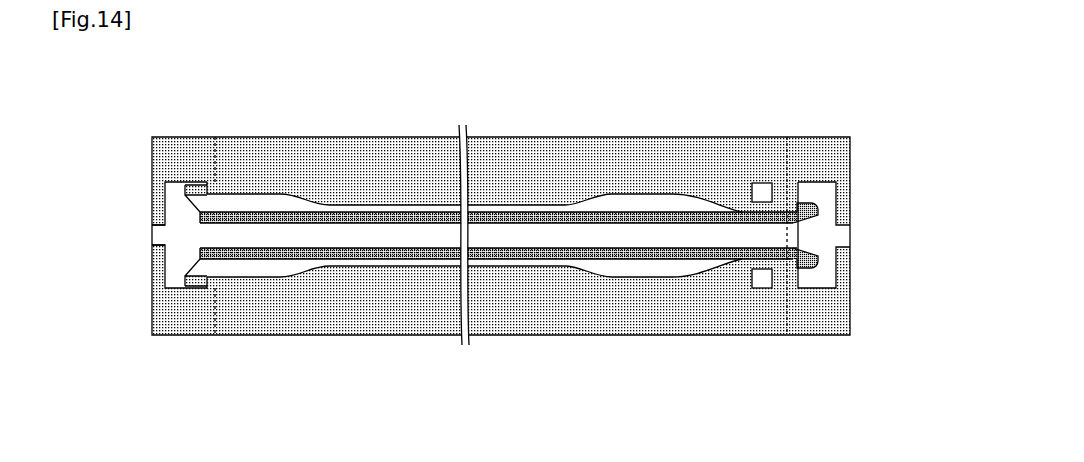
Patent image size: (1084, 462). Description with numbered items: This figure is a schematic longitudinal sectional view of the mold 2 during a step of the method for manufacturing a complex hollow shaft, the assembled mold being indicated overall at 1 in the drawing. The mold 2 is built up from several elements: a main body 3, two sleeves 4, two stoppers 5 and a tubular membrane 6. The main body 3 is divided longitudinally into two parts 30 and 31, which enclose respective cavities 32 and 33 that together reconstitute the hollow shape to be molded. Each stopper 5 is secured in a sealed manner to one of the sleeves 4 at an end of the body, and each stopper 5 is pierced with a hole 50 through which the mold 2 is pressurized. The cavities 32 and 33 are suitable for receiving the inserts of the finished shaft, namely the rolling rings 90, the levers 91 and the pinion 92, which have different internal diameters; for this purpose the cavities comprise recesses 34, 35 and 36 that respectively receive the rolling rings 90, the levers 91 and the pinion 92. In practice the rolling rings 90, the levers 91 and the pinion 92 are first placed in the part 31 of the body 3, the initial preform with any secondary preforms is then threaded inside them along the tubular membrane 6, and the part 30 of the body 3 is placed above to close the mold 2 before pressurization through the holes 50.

The pipe 1 is at (499, 259).
The mold 2 is at (665, 345).
The main body 3 is at (545, 338).
The sleeve 4 is at (210, 167).
The stopper 5 is at (153, 218).
The tubular membrane 6 is at (217, 242).
The part of the main body 30 is at (378, 167).
The part of the main body 31 is at (407, 308).
The cavity 32 is at (441, 212).
The cavity 33 is at (427, 268).
The recess 34 is at (340, 270).
The recess 35 is at (247, 286).
The recess 36 is at (763, 290).
The hole 50 is at (157, 238).
The rolling ring 90 is at (357, 200).
The lever 91 is at (242, 187).
The pinion 92 is at (760, 183).